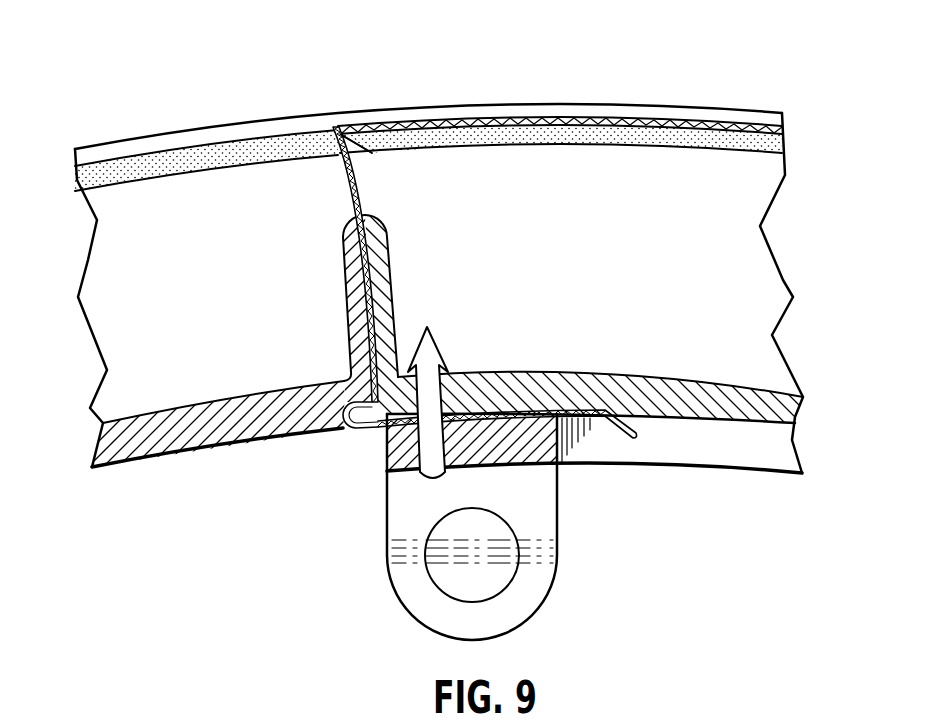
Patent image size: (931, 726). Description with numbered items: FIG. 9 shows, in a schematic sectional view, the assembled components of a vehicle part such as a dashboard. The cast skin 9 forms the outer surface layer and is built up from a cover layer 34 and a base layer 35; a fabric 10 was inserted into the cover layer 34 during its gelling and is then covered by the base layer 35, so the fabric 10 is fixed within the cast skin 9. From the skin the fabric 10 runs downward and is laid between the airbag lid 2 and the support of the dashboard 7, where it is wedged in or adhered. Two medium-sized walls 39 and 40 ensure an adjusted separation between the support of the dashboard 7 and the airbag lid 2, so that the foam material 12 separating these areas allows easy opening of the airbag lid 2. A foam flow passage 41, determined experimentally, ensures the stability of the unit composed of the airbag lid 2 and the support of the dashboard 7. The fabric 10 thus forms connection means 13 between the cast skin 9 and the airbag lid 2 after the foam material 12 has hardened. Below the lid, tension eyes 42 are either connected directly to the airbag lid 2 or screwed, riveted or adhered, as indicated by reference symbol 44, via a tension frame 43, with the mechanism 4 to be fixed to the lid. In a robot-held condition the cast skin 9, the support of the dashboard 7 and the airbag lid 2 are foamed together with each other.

The cast skin 9 is at (183, 128).
The cover layer 34 is at (277, 126).
The base layer 35 is at (572, 135).
The connection means 13 is at (374, 184).
The foam flow passage 41 is at (344, 193).
The fabric 10 is at (368, 206).
The wall 40 is at (380, 279).
The wall 39 is at (352, 288).
The foam material 12 is at (662, 275).
The support of the dashboard 7 is at (191, 432).
The airbag lid 2 is at (761, 394).
The tension frame 43 is at (395, 445).
The screwed, riveted or adhered fastening 44 is at (441, 454).
The tension eyes 42 is at (462, 568).
The mechanism 4 is at (528, 591).